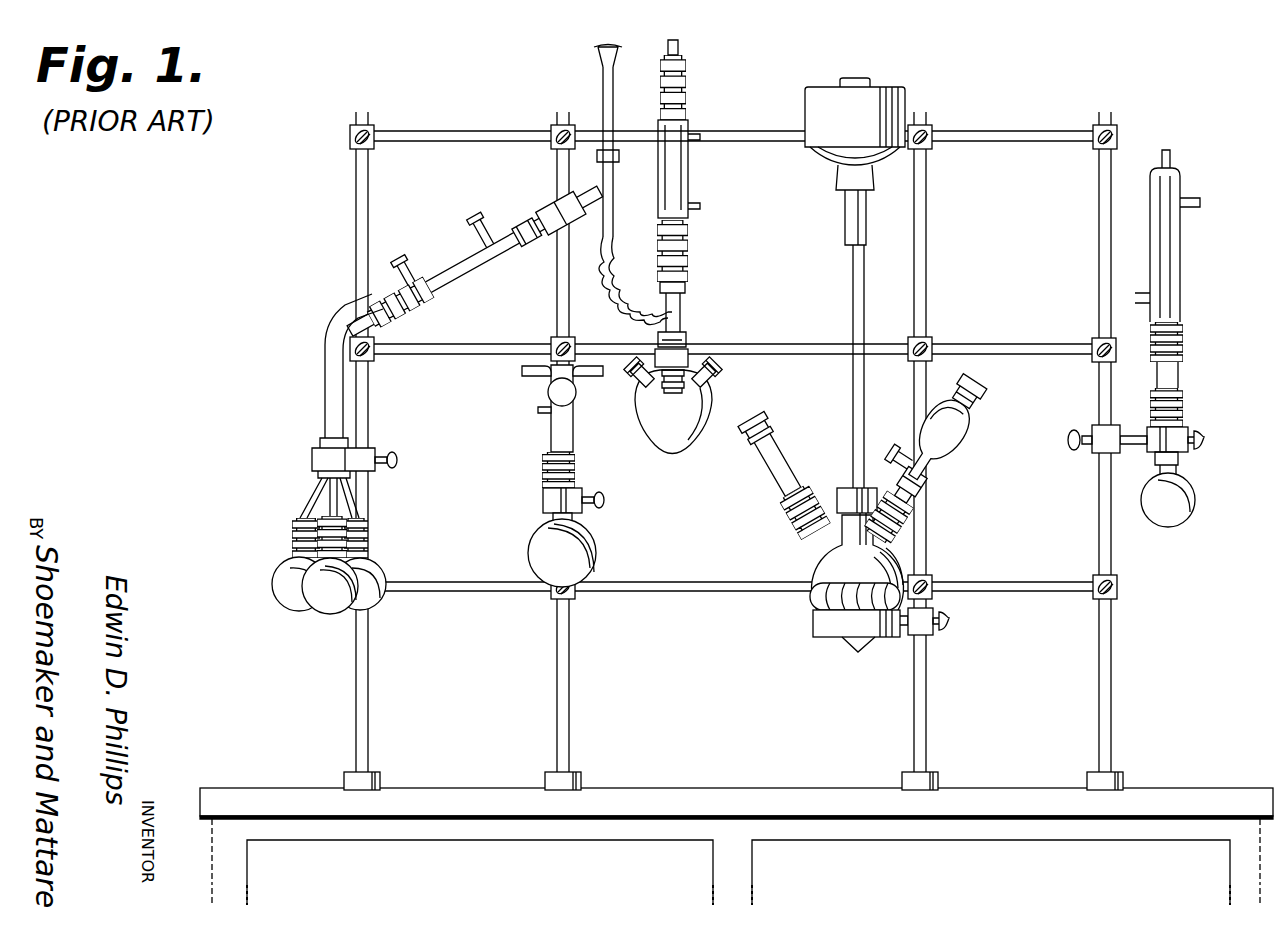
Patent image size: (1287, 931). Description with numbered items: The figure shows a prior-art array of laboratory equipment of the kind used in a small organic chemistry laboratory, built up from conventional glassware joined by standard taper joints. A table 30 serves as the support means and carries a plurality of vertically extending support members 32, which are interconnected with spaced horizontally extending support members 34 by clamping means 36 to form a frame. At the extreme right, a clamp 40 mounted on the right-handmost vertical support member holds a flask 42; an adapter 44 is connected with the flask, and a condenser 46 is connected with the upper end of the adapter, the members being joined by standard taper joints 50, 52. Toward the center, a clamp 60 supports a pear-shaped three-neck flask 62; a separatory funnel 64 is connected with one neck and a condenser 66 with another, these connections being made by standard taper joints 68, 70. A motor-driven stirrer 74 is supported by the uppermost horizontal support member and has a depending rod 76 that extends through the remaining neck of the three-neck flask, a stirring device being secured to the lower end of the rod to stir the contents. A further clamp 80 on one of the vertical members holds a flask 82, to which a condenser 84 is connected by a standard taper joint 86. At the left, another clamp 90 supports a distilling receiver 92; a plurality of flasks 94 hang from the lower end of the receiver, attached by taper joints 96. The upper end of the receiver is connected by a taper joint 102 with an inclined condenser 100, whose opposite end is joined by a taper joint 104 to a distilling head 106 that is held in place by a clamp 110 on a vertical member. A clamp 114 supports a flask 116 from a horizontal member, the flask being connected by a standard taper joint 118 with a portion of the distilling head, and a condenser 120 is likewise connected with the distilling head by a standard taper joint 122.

The table 30 is at (1192, 786).
The vertically extending support members 32 is at (1112, 716).
The horizontally extending support members 34 is at (690, 592).
The clamping means 36 is at (1122, 574).
The clamp 40 is at (1086, 458).
The flask 42 is at (1204, 502).
The adapter 44 is at (1194, 382).
The condenser 46 is at (1194, 286).
The standard taper joint 50 is at (1204, 408).
The standard taper joint 52 is at (1198, 336).
The clamp 60 is at (910, 647).
The pear-shaped three-neck flask 62 is at (800, 566).
The separatory funnel 64 is at (952, 466).
The condenser 66 is at (768, 476).
The standard taper joint 68 is at (921, 519).
The standard taper joint 70 is at (793, 524).
The motor-driven stirrer 74 is at (815, 172).
The rod 76 is at (866, 290).
The clamp 80 is at (588, 486).
The flask 82 is at (603, 522).
The condenser 84 is at (583, 425).
The standard taper joint 86 is at (534, 474).
The clamp 90 is at (391, 470).
The distilling receiver 92 is at (314, 392).
The flasks 94 is at (296, 620).
The taper joints 96 is at (376, 536).
The condenser 100 is at (465, 248).
The taper joint 102 is at (405, 270).
The taper joint 104 is at (518, 220).
The distilling head 106 is at (626, 194).
The clamp 110 is at (550, 240).
The clamp 114 is at (690, 354).
The flask 116 is at (718, 390).
The standard taper joint 118 is at (692, 330).
The condenser 120 is at (704, 171).
The standard taper joint 122 is at (692, 250).